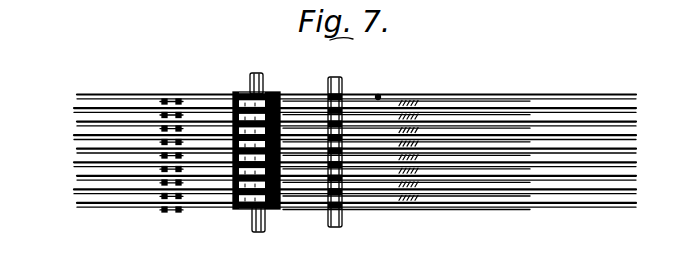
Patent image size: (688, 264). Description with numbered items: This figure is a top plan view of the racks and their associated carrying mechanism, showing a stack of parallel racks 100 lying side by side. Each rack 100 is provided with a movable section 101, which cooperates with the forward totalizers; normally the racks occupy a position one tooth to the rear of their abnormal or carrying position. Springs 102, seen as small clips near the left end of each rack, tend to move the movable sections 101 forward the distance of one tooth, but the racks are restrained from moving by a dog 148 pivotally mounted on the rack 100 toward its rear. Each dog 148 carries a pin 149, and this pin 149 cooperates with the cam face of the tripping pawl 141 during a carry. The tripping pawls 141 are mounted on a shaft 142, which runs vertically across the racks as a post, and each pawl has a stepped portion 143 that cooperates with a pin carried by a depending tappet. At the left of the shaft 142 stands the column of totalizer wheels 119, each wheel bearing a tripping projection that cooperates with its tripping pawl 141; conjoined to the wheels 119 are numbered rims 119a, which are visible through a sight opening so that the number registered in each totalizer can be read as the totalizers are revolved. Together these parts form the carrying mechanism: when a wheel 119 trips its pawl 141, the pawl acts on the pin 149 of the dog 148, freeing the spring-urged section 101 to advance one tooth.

The rack 100 is at (110, 109).
The movable section 101 is at (193, 105).
The springs 102 is at (170, 208).
The wheels 119 is at (271, 94).
The numbered rims 119a is at (247, 217).
The tripping pawl 141 is at (313, 198).
The shaft 142 is at (342, 215).
The stepped portion 143 is at (417, 122).
The dog 148 is at (450, 175).
The pin 149 is at (378, 102).